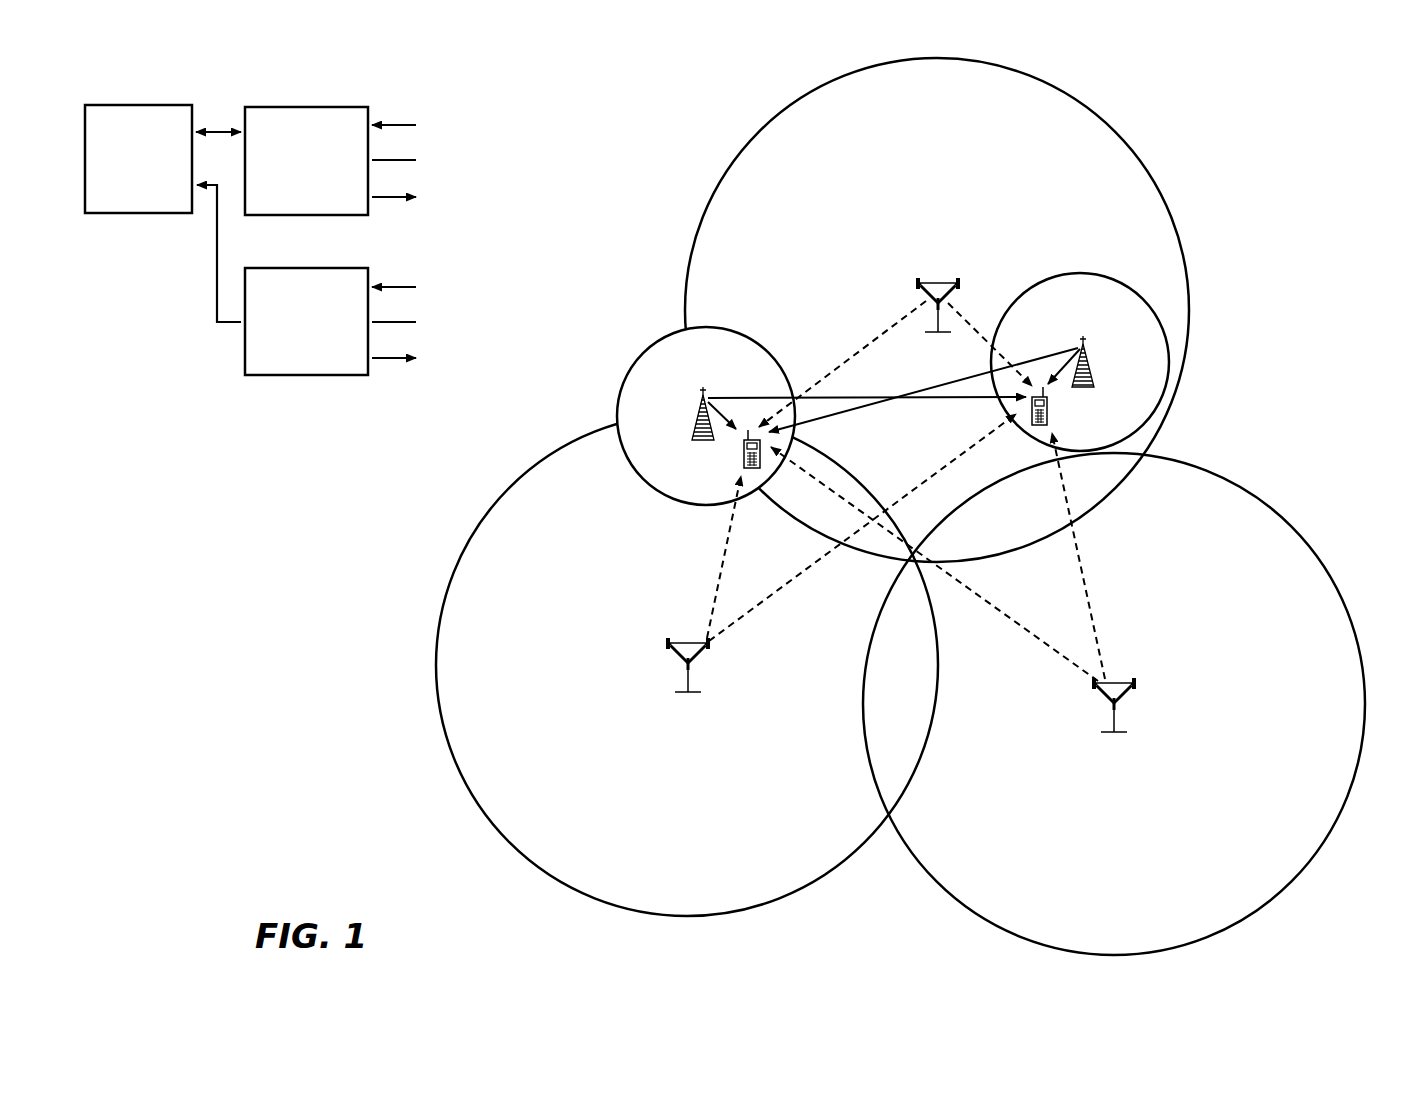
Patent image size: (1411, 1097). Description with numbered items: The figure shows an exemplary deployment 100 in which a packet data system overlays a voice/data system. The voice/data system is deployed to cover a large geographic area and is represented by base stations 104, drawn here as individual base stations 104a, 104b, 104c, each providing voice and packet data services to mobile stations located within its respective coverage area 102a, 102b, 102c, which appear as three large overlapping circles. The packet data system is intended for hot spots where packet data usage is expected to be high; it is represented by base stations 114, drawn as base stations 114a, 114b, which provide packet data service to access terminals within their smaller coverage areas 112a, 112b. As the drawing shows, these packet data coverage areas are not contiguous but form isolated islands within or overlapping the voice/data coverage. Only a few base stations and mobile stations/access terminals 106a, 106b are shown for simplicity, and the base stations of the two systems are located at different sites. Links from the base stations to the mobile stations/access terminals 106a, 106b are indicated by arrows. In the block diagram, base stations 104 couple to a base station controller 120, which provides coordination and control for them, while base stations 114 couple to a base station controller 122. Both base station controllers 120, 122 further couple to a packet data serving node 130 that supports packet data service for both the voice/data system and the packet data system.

The deployment 100 is at (1339, 108).
The coverage area 102a is at (758, 130).
The coverage area 102b is at (506, 490).
The coverage area 102c is at (1298, 512).
The base stations 104 is at (461, 211).
The base station 104a is at (934, 286).
The base station 104b is at (684, 642).
The base station 104c is at (1118, 681).
The mobile station/access terminal 106a is at (1048, 414).
The mobile station/access terminal 106b is at (743, 456).
The coverage area 112a is at (1079, 272).
The coverage area 112b is at (644, 348).
The base stations 114 is at (461, 372).
The base station 114a is at (1088, 360).
The base station 114b is at (698, 405).
The base station controller 120 is at (310, 105).
The base station controller 122 is at (310, 268).
The packet data serving node 130 is at (142, 104).